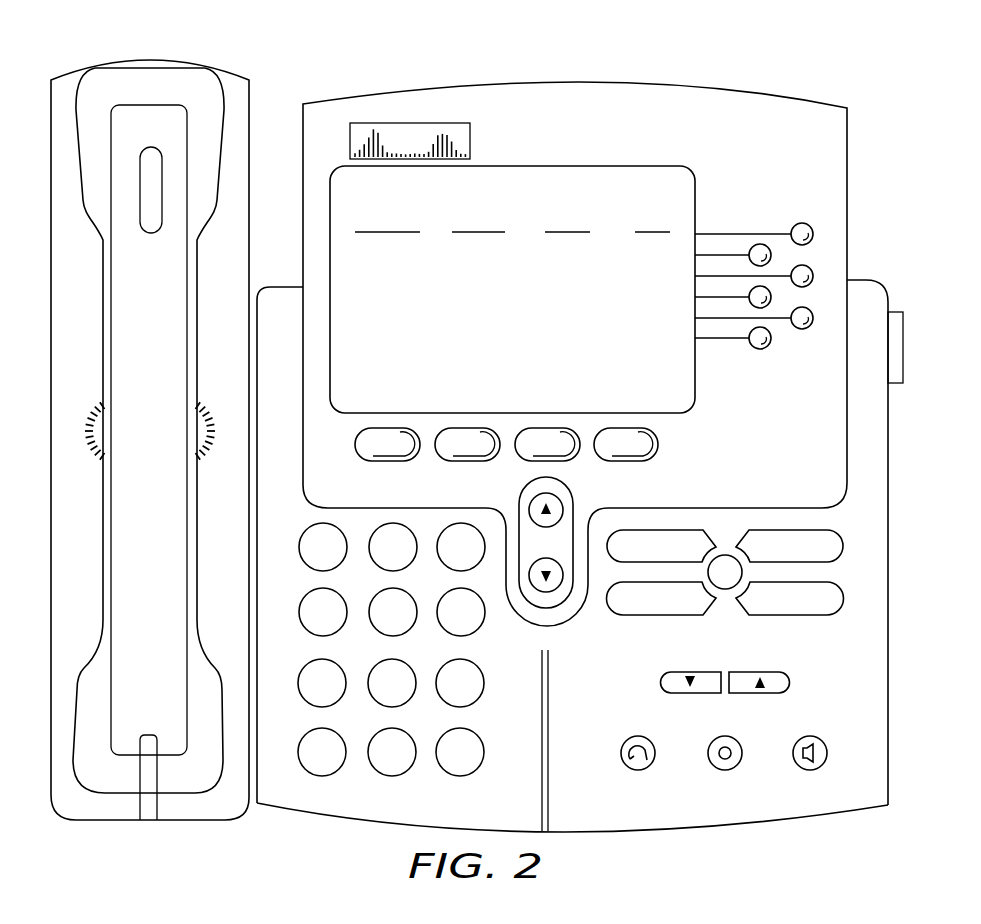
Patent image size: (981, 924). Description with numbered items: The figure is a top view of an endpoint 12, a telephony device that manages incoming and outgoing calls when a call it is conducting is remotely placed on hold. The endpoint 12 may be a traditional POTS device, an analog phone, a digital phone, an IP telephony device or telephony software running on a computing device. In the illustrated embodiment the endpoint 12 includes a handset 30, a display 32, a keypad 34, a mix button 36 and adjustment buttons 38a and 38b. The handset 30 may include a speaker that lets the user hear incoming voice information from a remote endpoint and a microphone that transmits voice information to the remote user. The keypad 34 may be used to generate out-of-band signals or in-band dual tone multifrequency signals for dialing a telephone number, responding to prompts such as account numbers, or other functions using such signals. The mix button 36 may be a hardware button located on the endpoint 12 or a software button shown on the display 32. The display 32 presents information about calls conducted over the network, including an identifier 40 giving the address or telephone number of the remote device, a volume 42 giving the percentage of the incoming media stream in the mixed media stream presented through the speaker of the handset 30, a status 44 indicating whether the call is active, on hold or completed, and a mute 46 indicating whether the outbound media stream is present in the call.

The endpoint 12 is at (580, 441).
The handset 30 is at (150, 77).
The display 32 is at (512, 289).
The keypad 34 is at (410, 770).
The mix button 36 is at (725, 771).
The adjustment button 38a is at (790, 682).
The adjustment button 38b is at (660, 682).
The identifier 40 is at (403, 204).
The volume 42 is at (491, 204).
The status 44 is at (581, 204).
The mute 46 is at (666, 204).